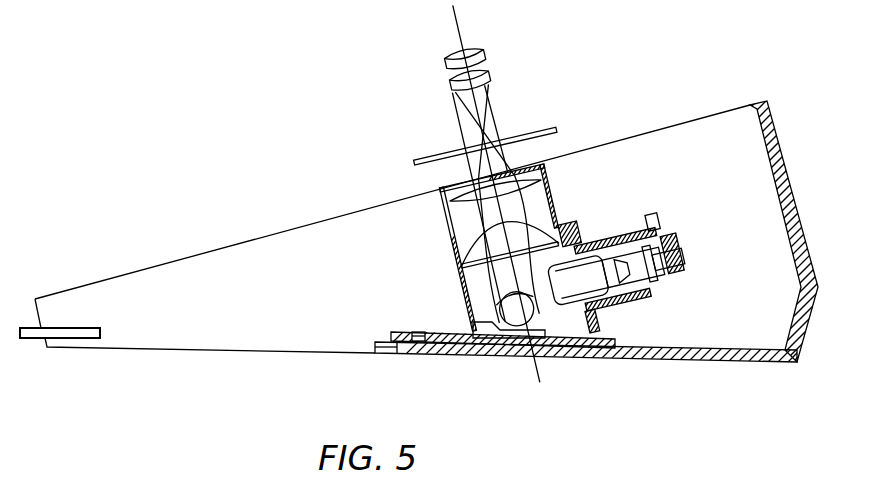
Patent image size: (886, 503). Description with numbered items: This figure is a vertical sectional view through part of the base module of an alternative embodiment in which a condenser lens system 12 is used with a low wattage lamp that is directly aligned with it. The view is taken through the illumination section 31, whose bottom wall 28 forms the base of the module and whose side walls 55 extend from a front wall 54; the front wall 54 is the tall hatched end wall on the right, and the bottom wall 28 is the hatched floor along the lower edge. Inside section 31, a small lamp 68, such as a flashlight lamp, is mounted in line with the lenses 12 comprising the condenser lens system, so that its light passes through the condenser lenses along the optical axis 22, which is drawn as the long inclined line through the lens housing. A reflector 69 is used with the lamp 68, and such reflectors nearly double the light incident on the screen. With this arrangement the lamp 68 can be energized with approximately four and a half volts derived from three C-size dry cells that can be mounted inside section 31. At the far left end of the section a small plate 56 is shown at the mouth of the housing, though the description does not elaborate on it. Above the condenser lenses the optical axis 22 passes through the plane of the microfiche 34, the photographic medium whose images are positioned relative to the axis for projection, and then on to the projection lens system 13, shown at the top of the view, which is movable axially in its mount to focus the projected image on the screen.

The condenser lens system 12 is at (548, 212).
The projection lens system 13 is at (482, 73).
The optical axis 22 is at (455, 32).
The bottom wall 28 is at (680, 358).
The illumination section 31 is at (296, 234).
The microfiche 34 is at (552, 128).
The front wall 54 is at (785, 152).
The side walls 55 is at (278, 302).
The front plate 56 is at (62, 330).
The small lamp 68 is at (478, 290).
The reflector 69 is at (565, 343).